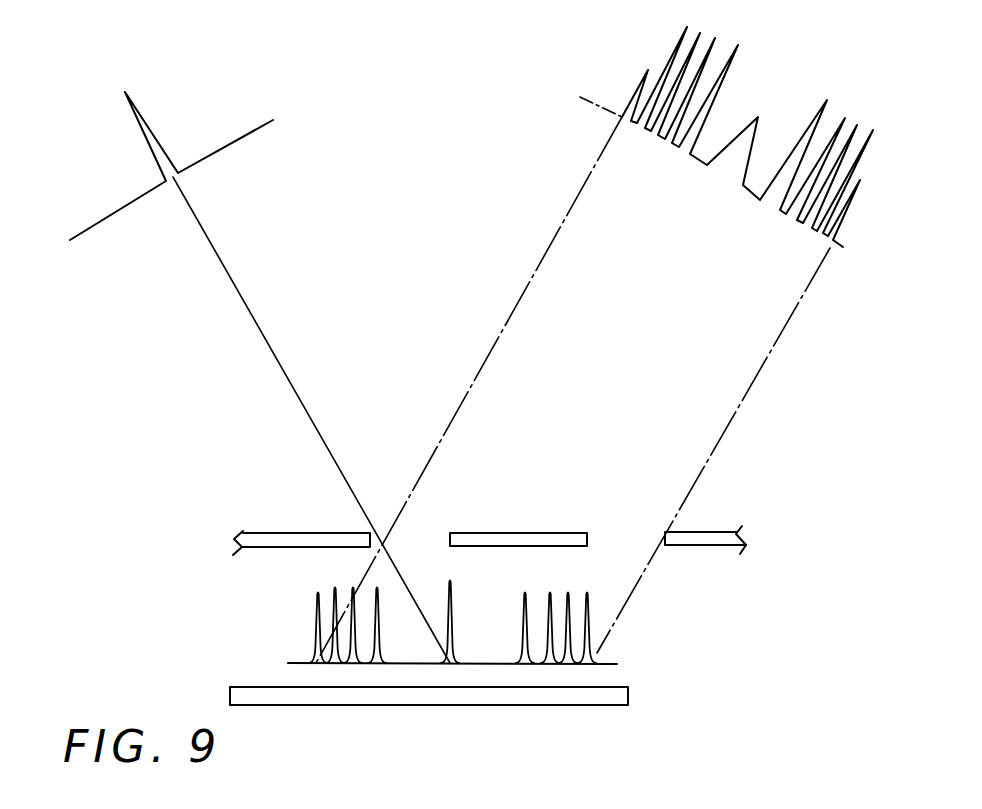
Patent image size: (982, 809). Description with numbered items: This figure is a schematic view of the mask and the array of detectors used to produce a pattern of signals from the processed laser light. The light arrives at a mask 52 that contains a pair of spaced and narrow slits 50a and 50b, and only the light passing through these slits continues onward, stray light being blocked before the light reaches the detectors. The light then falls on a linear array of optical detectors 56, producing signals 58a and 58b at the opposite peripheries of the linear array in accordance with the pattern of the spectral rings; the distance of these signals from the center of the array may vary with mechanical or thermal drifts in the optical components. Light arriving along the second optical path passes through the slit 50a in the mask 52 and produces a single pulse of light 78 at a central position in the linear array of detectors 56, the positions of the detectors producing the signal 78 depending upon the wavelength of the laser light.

The slit 50a is at (452, 540).
The slit 50b is at (587, 535).
The mask 52 is at (722, 546).
The linear array of optical detectors 56 is at (584, 704).
The signal 58a is at (333, 586).
The signal 58b is at (562, 589).
The single pulse of light 78 is at (451, 579).